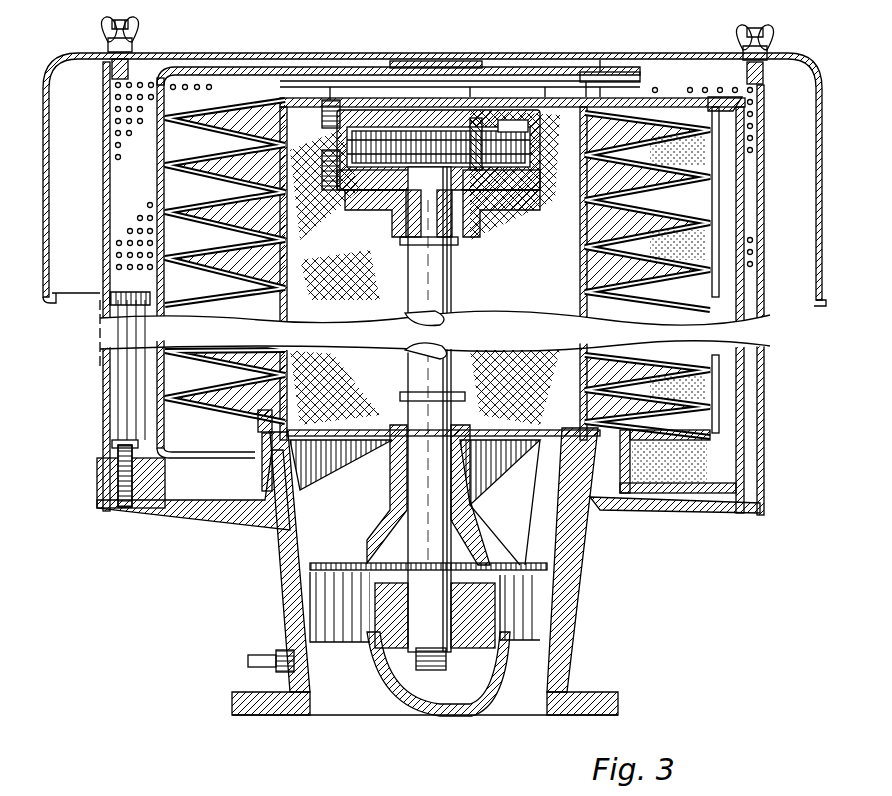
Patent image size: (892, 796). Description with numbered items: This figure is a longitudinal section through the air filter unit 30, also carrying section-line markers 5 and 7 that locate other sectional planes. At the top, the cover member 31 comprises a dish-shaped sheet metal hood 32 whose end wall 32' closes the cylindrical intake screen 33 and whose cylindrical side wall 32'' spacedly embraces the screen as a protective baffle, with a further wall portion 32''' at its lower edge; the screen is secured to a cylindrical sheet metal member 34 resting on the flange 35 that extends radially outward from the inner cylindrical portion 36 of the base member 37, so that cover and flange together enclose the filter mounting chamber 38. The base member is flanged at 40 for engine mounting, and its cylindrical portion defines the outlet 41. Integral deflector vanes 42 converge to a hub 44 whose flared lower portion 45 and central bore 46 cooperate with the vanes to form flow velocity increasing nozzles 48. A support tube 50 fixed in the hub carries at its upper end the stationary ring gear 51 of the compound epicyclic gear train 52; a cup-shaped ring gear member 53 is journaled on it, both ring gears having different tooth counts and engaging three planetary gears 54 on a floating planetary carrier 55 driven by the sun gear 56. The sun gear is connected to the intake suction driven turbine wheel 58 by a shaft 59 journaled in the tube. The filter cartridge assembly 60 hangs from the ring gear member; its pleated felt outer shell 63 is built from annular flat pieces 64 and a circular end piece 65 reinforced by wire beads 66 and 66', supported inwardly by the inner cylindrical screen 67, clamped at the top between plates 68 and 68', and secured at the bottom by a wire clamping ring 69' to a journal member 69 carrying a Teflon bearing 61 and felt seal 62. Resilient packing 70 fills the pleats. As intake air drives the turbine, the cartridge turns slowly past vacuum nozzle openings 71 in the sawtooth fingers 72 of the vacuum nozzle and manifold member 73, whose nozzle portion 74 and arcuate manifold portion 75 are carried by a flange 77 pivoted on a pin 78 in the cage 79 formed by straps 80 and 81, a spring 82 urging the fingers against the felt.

The section line of FIG. 5 is at (72, 104).
The section line of FIG. 7 is at (43, 85).
The air filter unit 30 is at (98, 312).
The cover member 31 is at (625, 57).
The sheet metal hood 32 is at (99, 48).
The end wall 32' is at (408, 60).
The cylindrical side wall 32'' is at (357, 102).
The flange 32''' is at (56, 309).
The intake screen 33 is at (103, 190).
The cylindrical sheet metal member 34 is at (770, 362).
The flange 35 is at (168, 510).
The inner cylindrical portion 36 is at (292, 612).
The base member 37 is at (286, 530).
The filter mounting chamber 38 is at (150, 417).
The mounting flange 40 is at (238, 695).
The outlet 41 is at (506, 712).
The deflector vanes 42 is at (488, 478).
The hub 44 is at (388, 425).
The flared lower portion 45 is at (525, 480).
The central bore 46 is at (460, 395).
The flow velocity increasing nozzles 48 is at (545, 553).
The support tube 50 is at (412, 320).
The stationary ring gear 51 is at (392, 212).
The compound epicyclic gear train 52 is at (522, 192).
The cup-shaped ring gear member 53 is at (330, 150).
The planetary gears 54 is at (510, 118).
The floating planetary carrier 55 is at (415, 108).
The sun gear 56 is at (478, 200).
The turbine wheel 58 is at (470, 676).
The shaft 59 is at (412, 240).
The filter cartridge assembly 60 is at (203, 378).
The Teflon bearing 61 is at (575, 442).
The felt seal 62 is at (586, 470).
The outer shell 63 is at (205, 142).
The annular flat pieces 64 is at (210, 195).
The circular end piece 65 is at (255, 115).
The annular wire beads 66 is at (225, 261).
The annular wire beads 66' is at (433, 273).
The inner cylindrical screen 67 is at (584, 360).
The plate 68 is at (507, 65).
The plate 68' is at (583, 65).
The cylindrical journal member 69 is at (242, 462).
The wire clamping ring 69' is at (244, 427).
The resilient fiber material 70 is at (243, 150).
The vacuum nozzle openings 71 is at (688, 238).
The sawtooth fingers 72 is at (700, 145).
The vacuum nozzle and manifold member 73 is at (746, 401).
The nozzle portion 74 is at (675, 458).
The manifold portion 75 is at (764, 212).
The flange 77 is at (680, 97).
The pin 78 is at (596, 80).
The cage 79 is at (252, 67).
The strap 80 is at (518, 95).
The strap 81 is at (395, 61).
The spring 82 is at (568, 530).